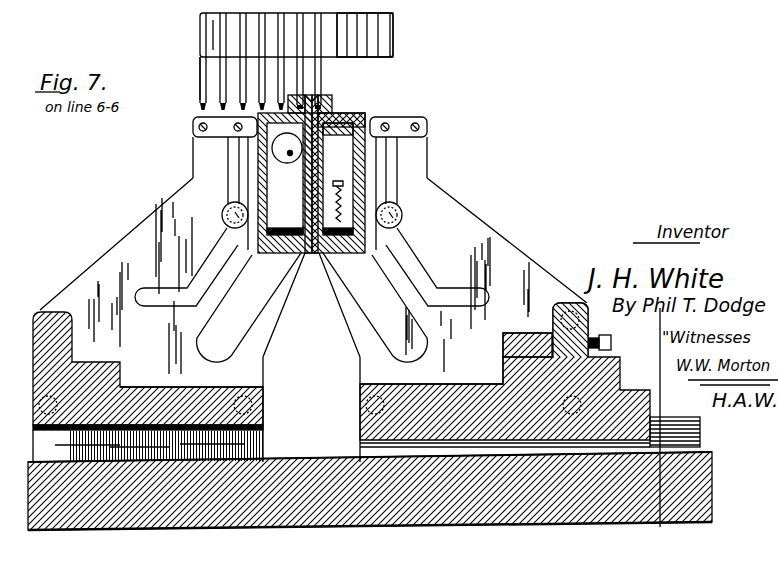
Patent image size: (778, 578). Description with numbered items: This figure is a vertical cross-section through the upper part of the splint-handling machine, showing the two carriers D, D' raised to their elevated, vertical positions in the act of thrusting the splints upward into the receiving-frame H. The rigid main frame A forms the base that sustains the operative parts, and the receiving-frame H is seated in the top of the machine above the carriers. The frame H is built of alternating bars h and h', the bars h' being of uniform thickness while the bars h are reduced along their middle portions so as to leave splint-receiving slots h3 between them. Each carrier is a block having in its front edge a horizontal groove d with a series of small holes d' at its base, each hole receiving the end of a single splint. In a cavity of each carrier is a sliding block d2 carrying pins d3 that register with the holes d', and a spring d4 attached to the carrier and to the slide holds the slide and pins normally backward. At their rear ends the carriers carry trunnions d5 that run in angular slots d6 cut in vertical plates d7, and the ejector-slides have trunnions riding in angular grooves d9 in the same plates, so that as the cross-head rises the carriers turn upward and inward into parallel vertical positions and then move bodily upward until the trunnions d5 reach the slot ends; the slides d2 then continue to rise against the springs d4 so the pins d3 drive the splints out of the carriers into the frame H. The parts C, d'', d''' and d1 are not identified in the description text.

The receiving-frame H is at (308, 43).
The bars h is at (260, 61).
The bars h' is at (227, 35).
The splint-receiving slots h3 is at (363, 14).
The pin C is at (203, 78).
The horizontal groove d is at (311, 162).
The holes d' is at (338, 113).
The stepped hatched body d'' is at (341, 371).
The layer / line d''' is at (366, 423).
The central bar d1 is at (306, 174).
The sliding block d2 is at (310, 184).
The pins d3 is at (293, 101).
The spring d4 is at (228, 218).
The trunnions d5 is at (398, 223).
The angular slots d6 is at (312, 267).
The vertical plates d7 is at (313, 320).
The angular grooves d9 is at (312, 307).
The carrier D is at (225, 183).
The carrier D' is at (396, 183).
The main frame A is at (728, 473).